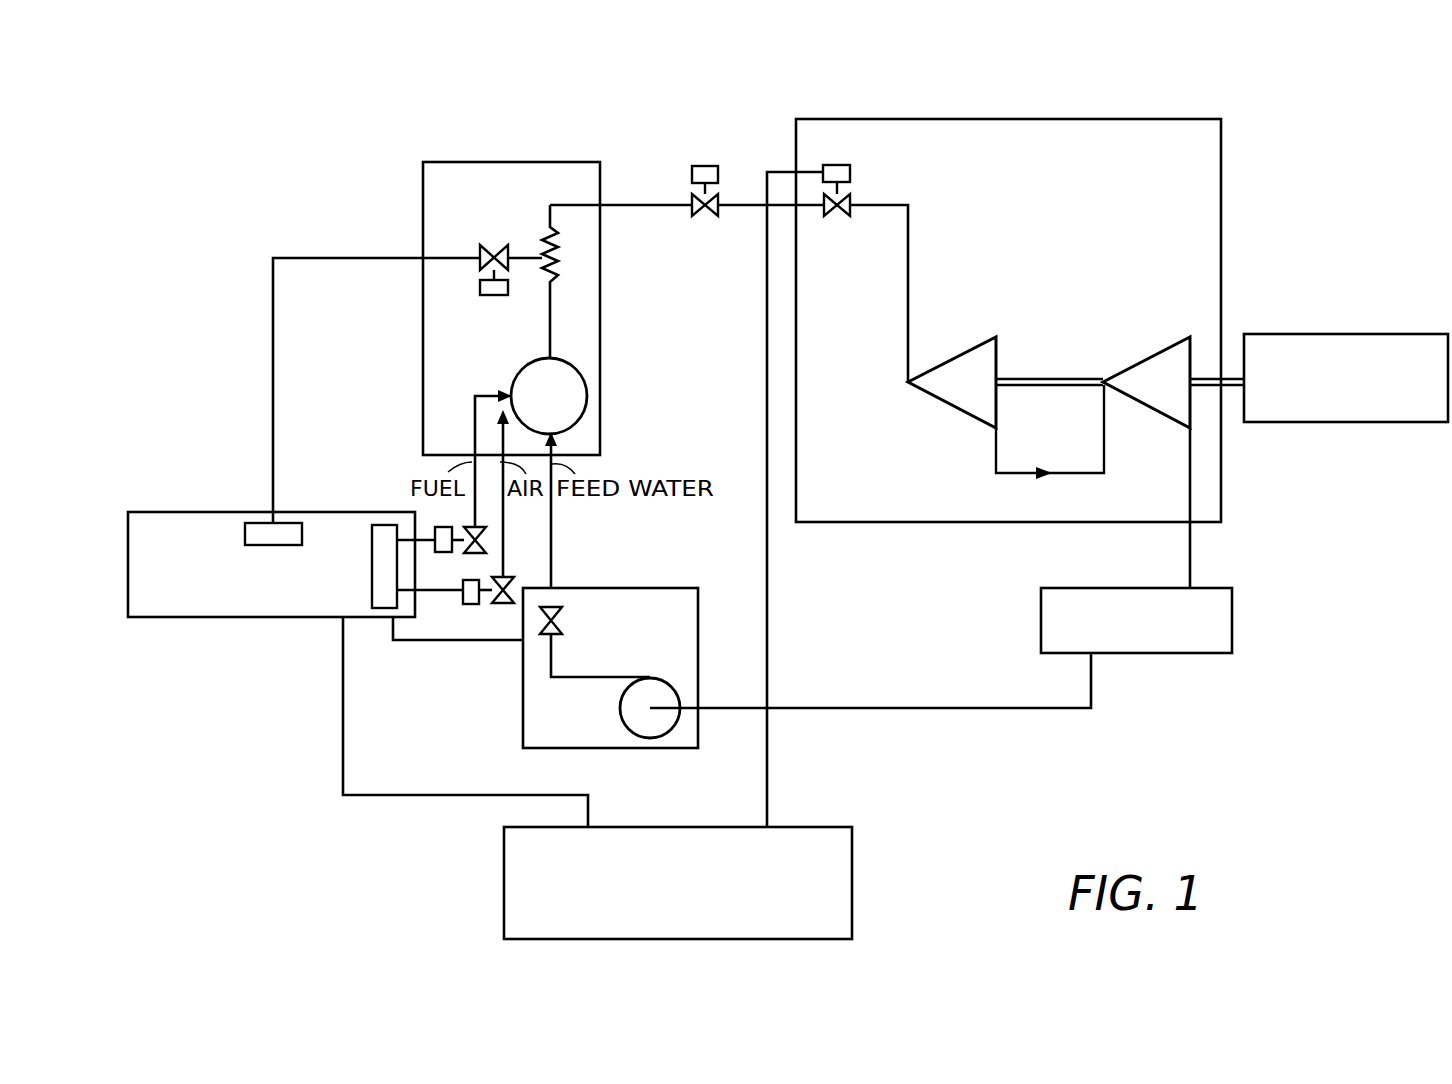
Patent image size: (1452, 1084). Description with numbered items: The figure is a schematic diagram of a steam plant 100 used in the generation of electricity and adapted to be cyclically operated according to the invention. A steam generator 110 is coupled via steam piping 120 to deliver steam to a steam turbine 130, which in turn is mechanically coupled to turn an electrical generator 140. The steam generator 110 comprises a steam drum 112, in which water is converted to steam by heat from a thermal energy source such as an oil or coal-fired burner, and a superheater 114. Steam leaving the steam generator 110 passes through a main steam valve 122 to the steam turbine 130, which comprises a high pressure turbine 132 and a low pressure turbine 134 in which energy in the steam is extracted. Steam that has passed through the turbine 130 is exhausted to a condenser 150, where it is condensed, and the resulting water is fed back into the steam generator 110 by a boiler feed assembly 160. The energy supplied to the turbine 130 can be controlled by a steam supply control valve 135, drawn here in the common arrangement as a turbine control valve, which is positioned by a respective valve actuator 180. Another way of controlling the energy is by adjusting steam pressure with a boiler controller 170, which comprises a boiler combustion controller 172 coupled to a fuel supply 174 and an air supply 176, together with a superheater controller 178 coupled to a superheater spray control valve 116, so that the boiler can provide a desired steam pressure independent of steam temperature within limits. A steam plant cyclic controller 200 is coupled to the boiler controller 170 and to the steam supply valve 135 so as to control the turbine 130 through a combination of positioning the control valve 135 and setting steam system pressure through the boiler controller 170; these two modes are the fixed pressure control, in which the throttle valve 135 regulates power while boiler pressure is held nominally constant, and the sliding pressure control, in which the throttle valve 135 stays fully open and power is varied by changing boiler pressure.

The steam plant 100 is at (1343, 249).
The steam generator 110 is at (526, 162).
The steam drum 112 is at (522, 368).
The superheater 114 is at (560, 262).
The superheater spray control valve 116 is at (480, 252).
The steam piping 120 is at (654, 205).
The main steam valve 122 is at (738, 160).
The steam turbine 130 is at (1013, 119).
The high pressure turbine 132 is at (997, 355).
The low pressure turbine 134 is at (1157, 356).
The steam supply control valve 135 is at (852, 212).
The electrical generator 140 is at (1296, 334).
The condenser 150 is at (1232, 620).
The boiler feed assembly 160 is at (698, 620).
The boiler controller 170 is at (238, 618).
The boiler combustion controller 172 is at (386, 525).
The fuel supply 174 is at (443, 553).
The air supply 176 is at (470, 604).
The superheater controller 178 is at (302, 535).
The valve actuator 180 is at (868, 160).
The steam plant cyclic controller 200 is at (852, 870).